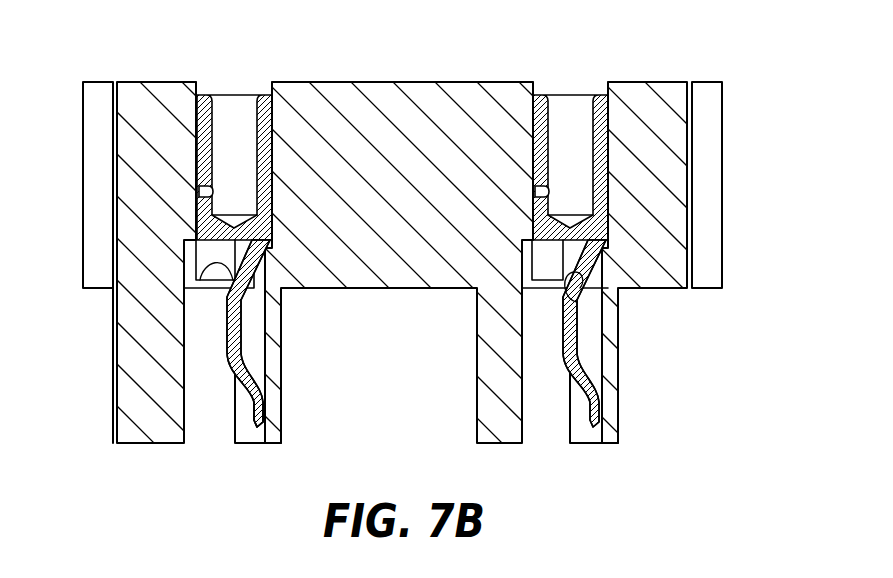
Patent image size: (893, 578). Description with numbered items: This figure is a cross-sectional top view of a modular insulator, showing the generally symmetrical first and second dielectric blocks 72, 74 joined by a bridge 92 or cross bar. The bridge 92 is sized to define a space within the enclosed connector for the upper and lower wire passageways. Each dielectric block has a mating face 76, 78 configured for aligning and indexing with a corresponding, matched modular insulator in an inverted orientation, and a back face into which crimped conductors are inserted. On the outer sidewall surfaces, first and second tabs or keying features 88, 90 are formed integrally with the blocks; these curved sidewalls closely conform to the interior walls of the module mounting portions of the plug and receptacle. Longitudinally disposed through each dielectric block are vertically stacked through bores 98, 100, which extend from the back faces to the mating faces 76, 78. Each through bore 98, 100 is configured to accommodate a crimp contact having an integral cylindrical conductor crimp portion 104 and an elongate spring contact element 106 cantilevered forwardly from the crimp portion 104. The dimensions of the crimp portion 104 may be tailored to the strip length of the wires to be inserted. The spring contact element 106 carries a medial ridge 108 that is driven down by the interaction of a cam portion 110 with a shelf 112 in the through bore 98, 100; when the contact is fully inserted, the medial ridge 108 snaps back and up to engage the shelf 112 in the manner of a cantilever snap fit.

The first dielectric block 72 is at (167, 90).
The second dielectric block 74 is at (647, 98).
The mating face 76 is at (253, 445).
The mating face 78 is at (583, 444).
The first tab or keying feature 88 is at (83, 123).
The second tab or keying feature 90 is at (723, 137).
The bridge 92 is at (373, 98).
The through bore 98 is at (232, 62).
The through bore 100 is at (560, 62).
The cylindrical conductor crimp portion 104 is at (267, 125).
The spring contact element 106 is at (223, 350).
The medial ridge 108 is at (227, 292).
The cam portion 110 is at (248, 403).
The shelf 112 is at (222, 260).